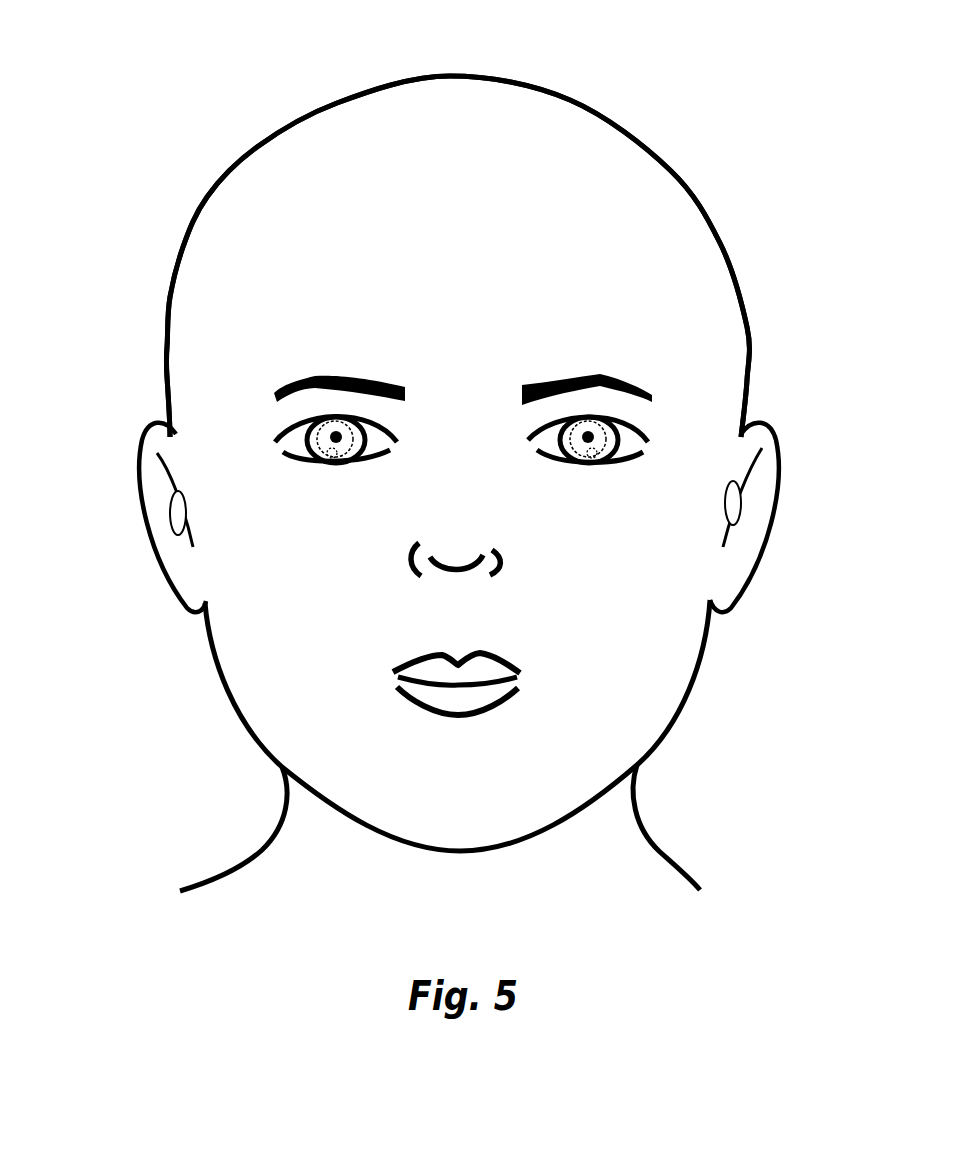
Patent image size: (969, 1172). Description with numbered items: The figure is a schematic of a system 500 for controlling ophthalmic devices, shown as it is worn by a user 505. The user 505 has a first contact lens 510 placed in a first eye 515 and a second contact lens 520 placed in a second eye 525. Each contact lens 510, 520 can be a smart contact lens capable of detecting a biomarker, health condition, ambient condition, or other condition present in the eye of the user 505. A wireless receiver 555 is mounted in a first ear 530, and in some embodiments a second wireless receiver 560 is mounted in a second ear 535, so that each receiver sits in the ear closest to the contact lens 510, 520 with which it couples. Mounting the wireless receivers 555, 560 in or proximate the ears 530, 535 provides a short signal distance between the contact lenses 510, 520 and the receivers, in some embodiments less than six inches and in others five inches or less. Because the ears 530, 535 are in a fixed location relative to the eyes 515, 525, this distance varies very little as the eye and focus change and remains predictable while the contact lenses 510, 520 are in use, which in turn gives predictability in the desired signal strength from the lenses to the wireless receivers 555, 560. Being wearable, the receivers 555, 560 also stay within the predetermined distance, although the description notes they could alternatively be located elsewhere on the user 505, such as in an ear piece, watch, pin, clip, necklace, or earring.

The system 500 is at (167, 72).
The user 505 is at (620, 155).
The first contact lens 510 is at (308, 430).
The first eye 515 is at (332, 413).
The second contact lens 520 is at (569, 440).
The second eye 525 is at (566, 432).
The first ear 530 is at (150, 434).
The second ear 535 is at (762, 434).
The wireless receiver 555 is at (176, 520).
The second wireless receiver 560 is at (735, 507).